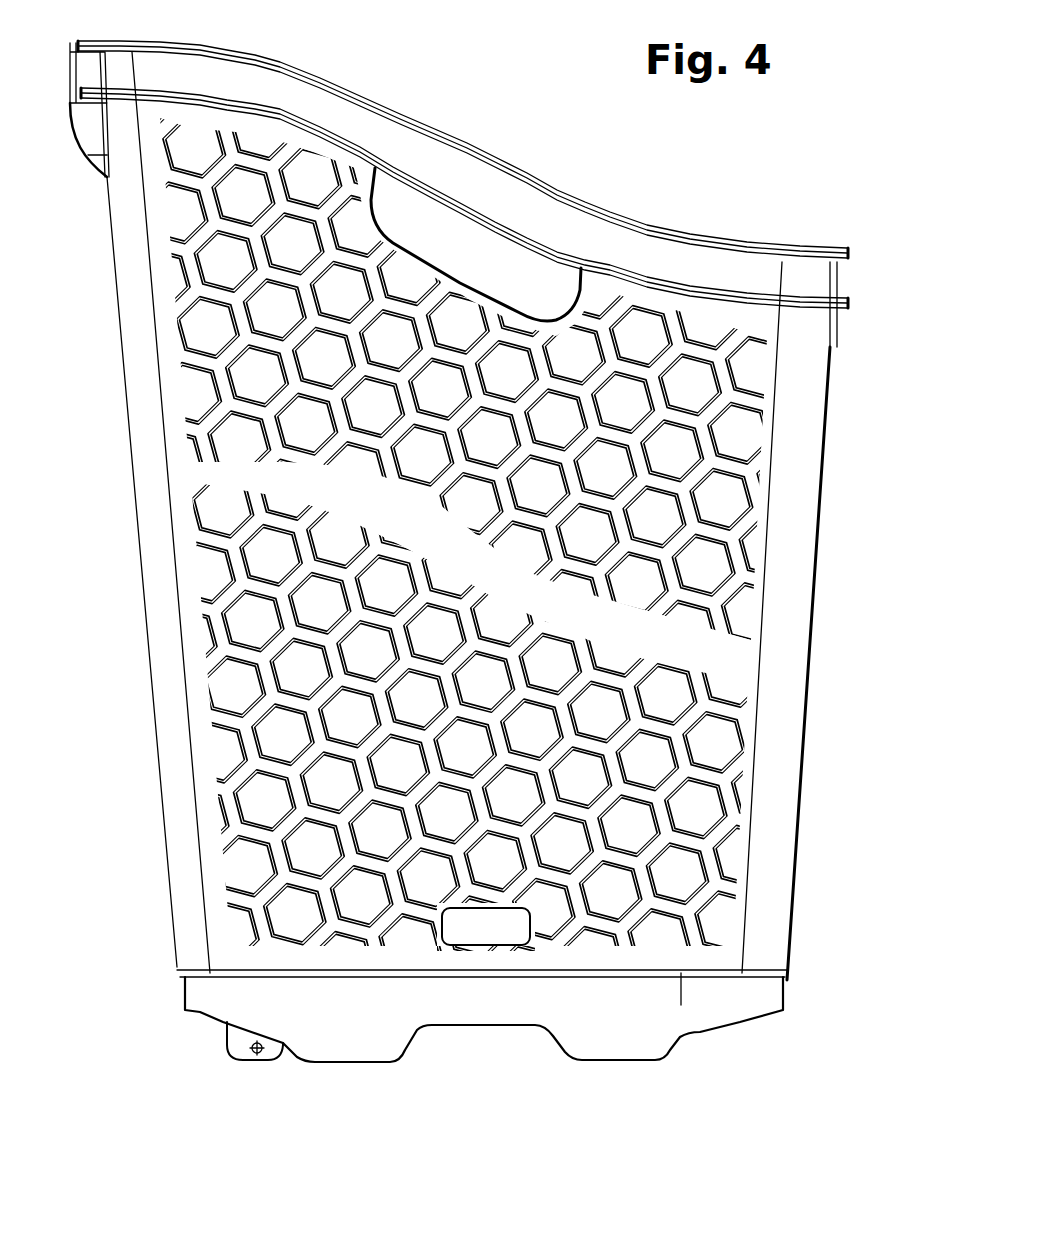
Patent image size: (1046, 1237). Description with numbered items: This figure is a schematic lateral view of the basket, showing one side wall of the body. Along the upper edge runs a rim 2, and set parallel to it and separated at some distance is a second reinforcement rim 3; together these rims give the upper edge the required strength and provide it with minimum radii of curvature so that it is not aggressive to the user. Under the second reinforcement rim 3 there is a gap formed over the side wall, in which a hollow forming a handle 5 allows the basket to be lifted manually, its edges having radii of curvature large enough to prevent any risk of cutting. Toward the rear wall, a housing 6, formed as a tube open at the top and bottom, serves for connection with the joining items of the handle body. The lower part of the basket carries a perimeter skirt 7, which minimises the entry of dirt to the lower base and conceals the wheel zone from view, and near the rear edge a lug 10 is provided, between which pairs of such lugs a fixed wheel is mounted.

The rim 2 is at (298, 67).
The second reinforcement rim 3 is at (337, 132).
The handles 5 is at (462, 243).
The housings 6 is at (93, 123).
The perimeter skirt 7 is at (363, 1047).
The lugs 10 is at (240, 1045).